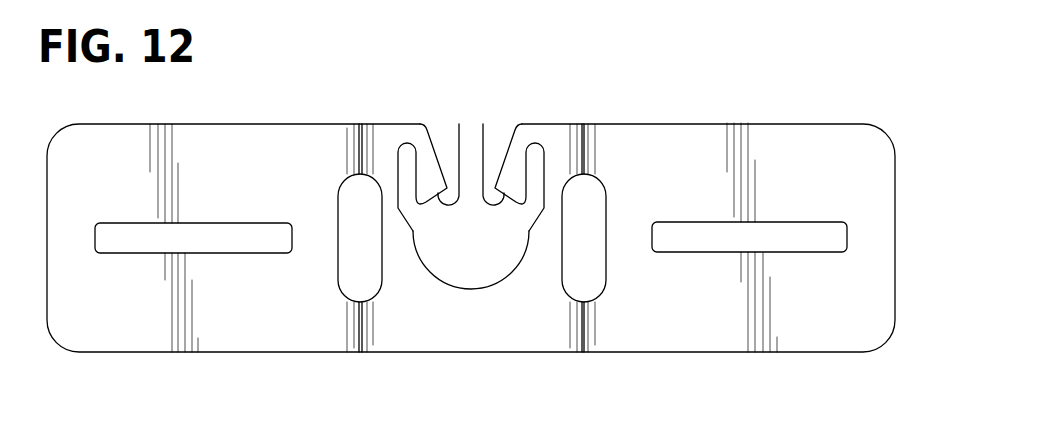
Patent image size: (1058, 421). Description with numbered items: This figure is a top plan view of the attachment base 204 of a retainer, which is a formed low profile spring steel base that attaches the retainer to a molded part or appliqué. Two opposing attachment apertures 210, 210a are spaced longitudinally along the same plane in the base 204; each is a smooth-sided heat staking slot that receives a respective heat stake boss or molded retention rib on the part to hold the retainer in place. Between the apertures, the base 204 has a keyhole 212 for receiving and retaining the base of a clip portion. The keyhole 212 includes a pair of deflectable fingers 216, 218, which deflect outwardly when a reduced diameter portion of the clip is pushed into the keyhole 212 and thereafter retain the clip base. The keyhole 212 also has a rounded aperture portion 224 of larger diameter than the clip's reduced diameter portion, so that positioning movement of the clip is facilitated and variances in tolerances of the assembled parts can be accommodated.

The attachment base 204 is at (850, 50).
The first attachment aperture 210 is at (265, 230).
The attachment aperture 210a is at (790, 228).
The keyhole 212 is at (471, 132).
The deflectable finger 216 is at (483, 165).
The deflectable finger 218 is at (459, 165).
The rounded aperture portion 224 is at (508, 282).